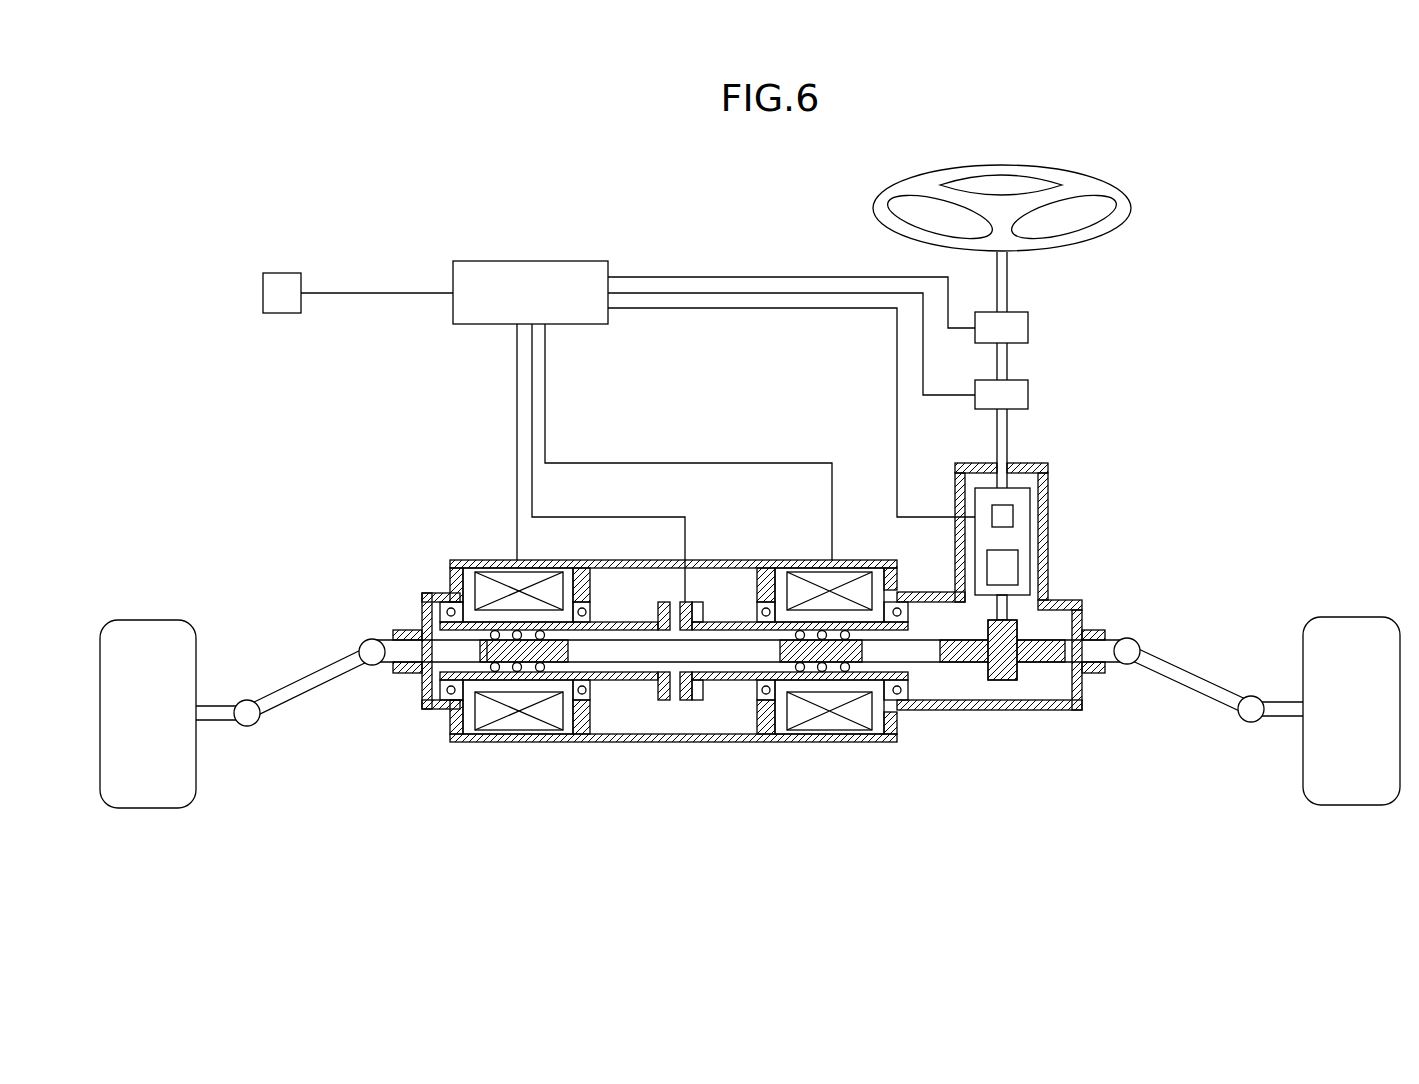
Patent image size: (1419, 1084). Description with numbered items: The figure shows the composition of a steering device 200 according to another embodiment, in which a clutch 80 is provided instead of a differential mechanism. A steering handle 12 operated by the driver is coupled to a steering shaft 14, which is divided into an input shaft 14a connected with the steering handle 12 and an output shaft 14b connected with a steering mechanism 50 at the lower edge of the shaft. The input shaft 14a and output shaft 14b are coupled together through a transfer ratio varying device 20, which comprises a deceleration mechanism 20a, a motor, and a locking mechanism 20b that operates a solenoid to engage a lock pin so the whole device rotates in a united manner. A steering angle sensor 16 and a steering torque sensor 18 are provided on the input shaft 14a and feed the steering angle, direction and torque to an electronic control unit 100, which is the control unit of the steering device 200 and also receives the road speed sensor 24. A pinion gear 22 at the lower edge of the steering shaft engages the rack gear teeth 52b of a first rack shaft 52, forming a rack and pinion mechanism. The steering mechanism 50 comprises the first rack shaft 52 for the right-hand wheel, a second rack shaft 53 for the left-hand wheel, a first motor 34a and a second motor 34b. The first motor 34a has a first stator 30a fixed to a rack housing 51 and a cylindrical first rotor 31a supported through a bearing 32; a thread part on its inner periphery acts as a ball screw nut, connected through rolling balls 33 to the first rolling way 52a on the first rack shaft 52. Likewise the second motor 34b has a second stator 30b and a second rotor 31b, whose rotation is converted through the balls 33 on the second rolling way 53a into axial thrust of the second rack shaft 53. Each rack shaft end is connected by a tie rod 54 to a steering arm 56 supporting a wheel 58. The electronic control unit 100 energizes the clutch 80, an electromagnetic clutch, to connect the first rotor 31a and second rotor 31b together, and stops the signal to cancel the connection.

The steering handle 12 is at (1118, 192).
The steering shaft 14 is at (1064, 436).
The input shaft 14a is at (1010, 480).
The output shaft 14b is at (1010, 607).
The steering angle sensor 16 is at (1028, 325).
The steering torque sensor 18 is at (1028, 390).
The transfer ratio varying device 20 is at (1074, 541).
The deceleration mechanism 20a is at (1018, 558).
The locking mechanism 20b is at (1013, 510).
The pinion gear 22 is at (1017, 632).
The road speed sensor 24 is at (289, 272).
The first stator 30a is at (840, 722).
The second stator 30b is at (503, 700).
The first rotor 31a is at (815, 705).
The second rotor 31b is at (540, 680).
The bearing 32 is at (440, 722).
The rolling balls 33 is at (445, 712).
The first motor 34a is at (794, 709).
The second motor 34b is at (555, 709).
The steering mechanism 50 is at (688, 704).
The rack housing 51 is at (888, 728).
The first rack shaft 52 is at (1098, 670).
The first rolling way 52a is at (955, 745).
The rack gear teeth 52b is at (1062, 712).
The second rack shaft 53 is at (422, 655).
The second rolling way 53a is at (413, 630).
The tie rod 54 is at (305, 685).
The steering arm 56 is at (213, 718).
The wheel 58 is at (148, 797).
The clutch 80 is at (710, 737).
The electronic control unit 100 is at (565, 261).
The steering device 200 is at (733, 908).